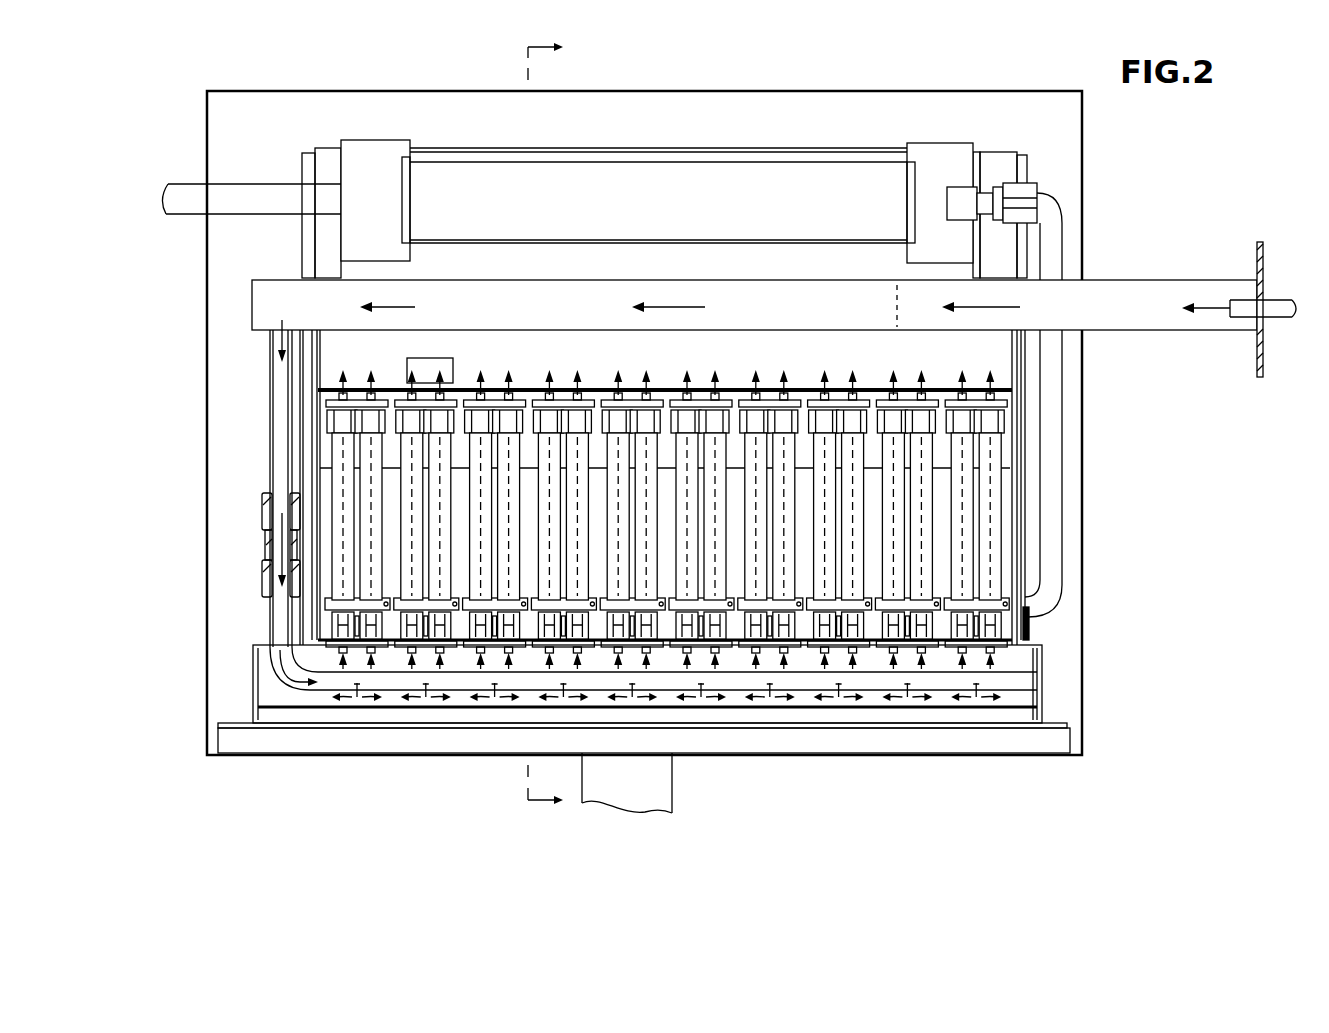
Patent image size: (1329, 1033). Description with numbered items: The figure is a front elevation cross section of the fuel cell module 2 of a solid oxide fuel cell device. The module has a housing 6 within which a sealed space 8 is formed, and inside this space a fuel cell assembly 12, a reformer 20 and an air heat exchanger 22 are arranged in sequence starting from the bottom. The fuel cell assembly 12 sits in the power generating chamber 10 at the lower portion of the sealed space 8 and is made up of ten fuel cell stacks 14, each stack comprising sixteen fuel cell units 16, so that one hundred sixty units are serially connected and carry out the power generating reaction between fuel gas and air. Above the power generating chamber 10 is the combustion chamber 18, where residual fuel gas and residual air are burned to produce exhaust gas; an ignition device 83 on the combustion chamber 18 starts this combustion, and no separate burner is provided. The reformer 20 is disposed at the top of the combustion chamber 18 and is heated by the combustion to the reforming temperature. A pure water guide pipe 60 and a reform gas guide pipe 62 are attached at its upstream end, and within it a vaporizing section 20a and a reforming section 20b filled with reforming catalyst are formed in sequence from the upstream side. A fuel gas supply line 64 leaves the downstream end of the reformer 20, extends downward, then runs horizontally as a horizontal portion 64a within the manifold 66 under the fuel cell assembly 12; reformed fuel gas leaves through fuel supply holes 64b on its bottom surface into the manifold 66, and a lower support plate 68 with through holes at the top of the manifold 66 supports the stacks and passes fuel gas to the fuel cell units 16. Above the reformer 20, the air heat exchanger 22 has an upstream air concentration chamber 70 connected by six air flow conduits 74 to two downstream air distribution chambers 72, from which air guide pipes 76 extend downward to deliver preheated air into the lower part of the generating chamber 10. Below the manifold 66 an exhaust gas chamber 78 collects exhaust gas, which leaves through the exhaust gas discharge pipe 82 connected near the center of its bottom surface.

The fuel cell module 2 is at (1143, 224).
The housing 6 is at (1083, 490).
The sealed space 8 is at (782, 568).
The power generating chamber 10 is at (738, 560).
The fuel cell assembly 12 is at (1095, 535).
The fuel cell stack 14 is at (1095, 535).
The fuel cell unit 16 is at (1003, 545).
The combustion chamber 18 is at (782, 568).
The reformer 20 is at (754, 337).
The vaporizing section 20a is at (1112, 321).
The reforming section 20b is at (794, 321).
The air heat exchanger 22 is at (534, 145).
The air flow conduit 74 is at (800, 150).
The pure water guide pipe 60 is at (1249, 283).
The reform gas guide pipe 62 is at (1280, 300).
The fuel gas supply line 64 is at (270, 452).
The horizontal portion 64a is at (397, 692).
The fuel supply hole 64b is at (340, 690).
The manifold 66 is at (705, 729).
The lower support plate 68 is at (1010, 643).
The air concentration chamber 70 is at (380, 140).
The air distribution chamber 72 is at (948, 143).
The air guide pipe 76 is at (1057, 438).
The exhaust gas chamber 78 is at (987, 742).
The exhaust gas discharge pipe 82 is at (673, 790).
The ignition device 83 is at (455, 365).